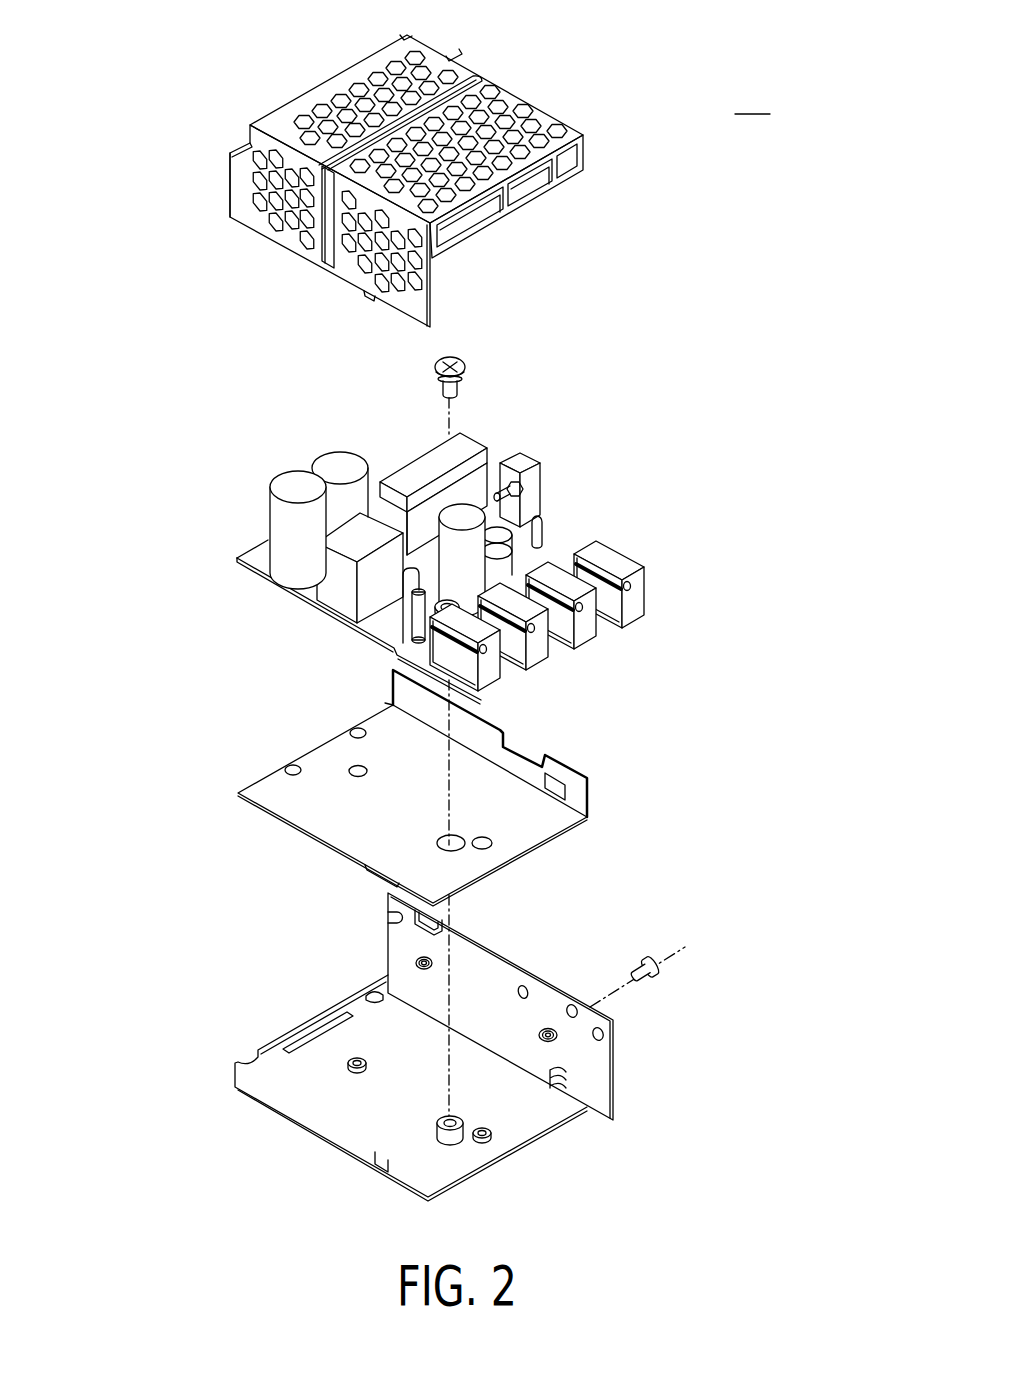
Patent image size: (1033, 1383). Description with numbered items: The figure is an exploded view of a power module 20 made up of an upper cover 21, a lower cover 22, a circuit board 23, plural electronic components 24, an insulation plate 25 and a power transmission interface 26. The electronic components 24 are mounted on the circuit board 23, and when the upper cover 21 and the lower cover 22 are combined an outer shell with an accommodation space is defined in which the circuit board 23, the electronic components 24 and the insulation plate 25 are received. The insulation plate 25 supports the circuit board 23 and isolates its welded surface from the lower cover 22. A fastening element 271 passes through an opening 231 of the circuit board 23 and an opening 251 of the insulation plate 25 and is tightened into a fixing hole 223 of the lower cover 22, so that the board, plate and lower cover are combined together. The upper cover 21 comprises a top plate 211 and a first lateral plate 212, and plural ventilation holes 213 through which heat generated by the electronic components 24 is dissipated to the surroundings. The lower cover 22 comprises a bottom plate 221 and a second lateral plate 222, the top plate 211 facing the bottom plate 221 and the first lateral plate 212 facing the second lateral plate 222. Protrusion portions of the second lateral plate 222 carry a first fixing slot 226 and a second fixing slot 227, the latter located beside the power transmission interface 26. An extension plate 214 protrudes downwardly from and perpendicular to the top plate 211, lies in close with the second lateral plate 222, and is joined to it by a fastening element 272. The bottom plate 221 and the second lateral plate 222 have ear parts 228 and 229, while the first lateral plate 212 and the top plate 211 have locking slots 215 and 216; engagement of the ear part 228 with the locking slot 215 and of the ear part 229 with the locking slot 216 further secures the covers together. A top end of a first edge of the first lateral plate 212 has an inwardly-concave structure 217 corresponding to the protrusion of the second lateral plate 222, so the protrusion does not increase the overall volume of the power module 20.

The power module 20 is at (752, 97).
The upper cover 21 is at (419, 183).
The top plate 211 is at (472, 119).
The first lateral plate 212 is at (352, 232).
The ventilation holes 213 is at (497, 100).
The extension plate 214 is at (586, 146).
The locking slot 215 is at (369, 293).
The locking slot 216 is at (447, 60).
The inwardly-concave structure 217 is at (237, 143).
The lower cover 22 is at (453, 1066).
The bottom plate 221 is at (427, 1077).
The second lateral plate 222 is at (479, 1005).
The fixing hole 223 is at (450, 1118).
The first fixing slot 226 is at (390, 917).
The second fixing slot 227 is at (605, 1034).
The ear part 228 is at (380, 1167).
The ear part 229 is at (455, 923).
The circuit board 23 is at (266, 562).
The opening 231 is at (452, 602).
The electronic components 24 is at (332, 462).
The insulation plate 25 is at (417, 788).
The opening 251 is at (452, 843).
The power transmission interface 26 is at (573, 623).
The fastening element 271 is at (465, 362).
The fastening element 272 is at (650, 958).